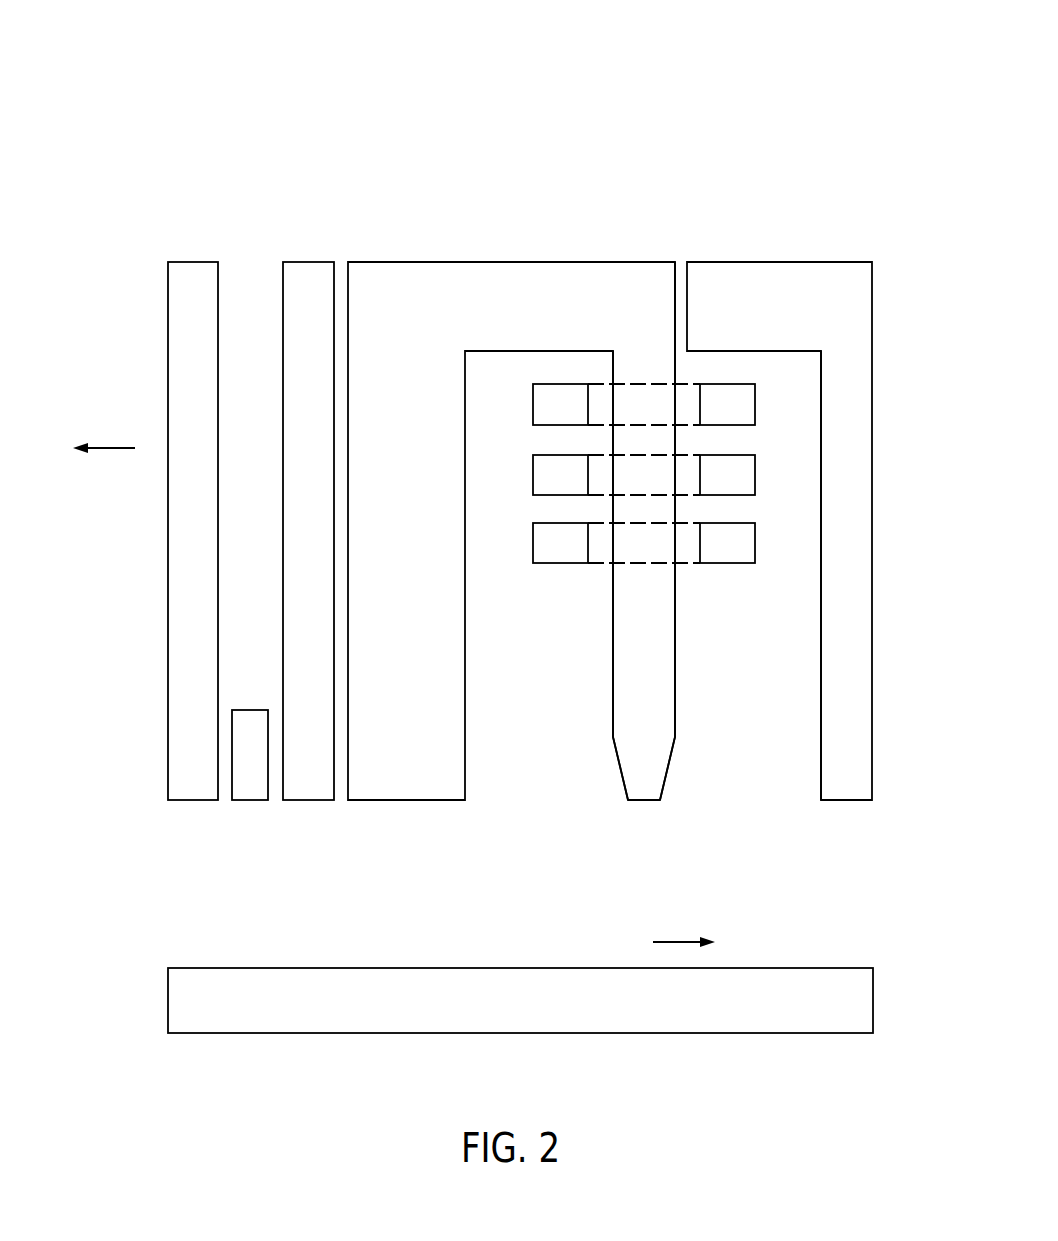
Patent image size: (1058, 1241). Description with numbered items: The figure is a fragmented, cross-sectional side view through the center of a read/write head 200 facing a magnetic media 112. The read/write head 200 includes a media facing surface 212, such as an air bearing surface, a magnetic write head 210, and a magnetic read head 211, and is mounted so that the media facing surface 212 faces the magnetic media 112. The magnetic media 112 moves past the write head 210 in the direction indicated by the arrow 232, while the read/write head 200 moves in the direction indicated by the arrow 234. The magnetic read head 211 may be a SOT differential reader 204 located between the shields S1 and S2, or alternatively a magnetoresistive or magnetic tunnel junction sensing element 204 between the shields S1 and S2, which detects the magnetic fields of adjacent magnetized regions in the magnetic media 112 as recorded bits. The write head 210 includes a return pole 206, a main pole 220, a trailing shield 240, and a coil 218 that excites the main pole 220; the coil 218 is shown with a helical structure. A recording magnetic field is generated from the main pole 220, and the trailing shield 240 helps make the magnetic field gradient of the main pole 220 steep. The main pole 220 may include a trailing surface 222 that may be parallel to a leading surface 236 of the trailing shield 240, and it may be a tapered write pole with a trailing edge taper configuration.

The read/write head 200 is at (158, 58).
The magnetic read head 211 is at (335, 202).
The magnetic write head 210 is at (872, 202).
The shield S1 is at (193, 801).
The SOT differential reader 204 is at (250, 801).
The shield S2 is at (308, 801).
The return pole 206 is at (400, 801).
The main pole 220 is at (613, 757).
The trailing surface 222 is at (675, 715).
The media facing surface 212 is at (640, 801).
The coil 218 is at (557, 564).
The trailing shield 240 is at (872, 752).
The leading surface 236 is at (820, 633).
The arrow 234 is at (118, 447).
The arrow 232 is at (671, 942).
The magnetic media 112 is at (873, 1017).